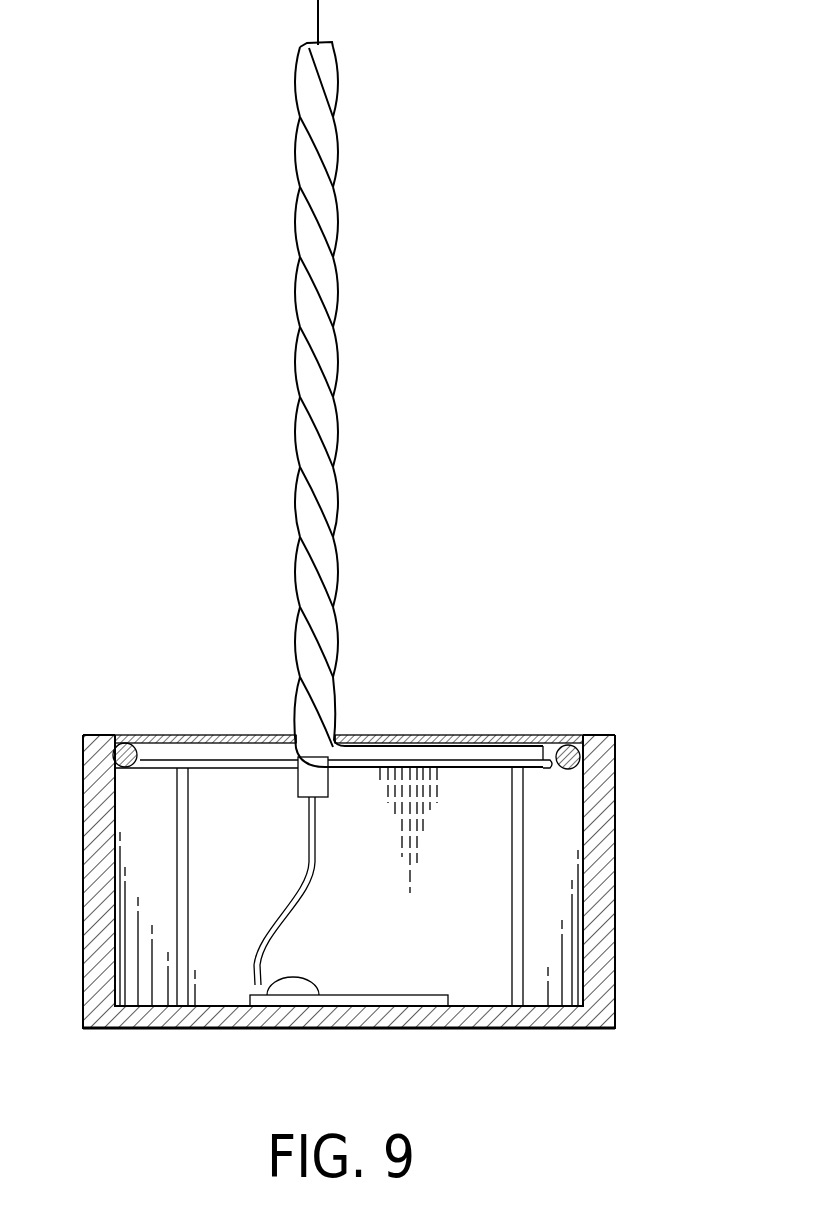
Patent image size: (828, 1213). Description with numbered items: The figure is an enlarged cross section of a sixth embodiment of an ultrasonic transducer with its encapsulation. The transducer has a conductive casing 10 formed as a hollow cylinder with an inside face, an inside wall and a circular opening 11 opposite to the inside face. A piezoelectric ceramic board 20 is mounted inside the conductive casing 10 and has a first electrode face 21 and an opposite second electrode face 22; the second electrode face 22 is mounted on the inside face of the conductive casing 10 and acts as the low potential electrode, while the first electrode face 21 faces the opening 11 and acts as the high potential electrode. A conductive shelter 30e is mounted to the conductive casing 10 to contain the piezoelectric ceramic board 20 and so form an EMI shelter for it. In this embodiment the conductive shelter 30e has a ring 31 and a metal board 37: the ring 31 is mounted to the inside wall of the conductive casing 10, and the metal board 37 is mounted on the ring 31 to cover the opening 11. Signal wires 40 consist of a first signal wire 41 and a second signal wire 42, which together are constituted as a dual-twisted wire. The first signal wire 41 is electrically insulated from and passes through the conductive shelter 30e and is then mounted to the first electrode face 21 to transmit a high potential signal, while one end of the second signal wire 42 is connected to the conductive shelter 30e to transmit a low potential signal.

The conductive casing 10 is at (615, 907).
The opening 11 is at (572, 797).
The piezoelectric ceramic board 20 is at (425, 992).
The first electrode face 21 is at (345, 993).
The second electrode face 22 is at (417, 1028).
The conductive shelter 30e is at (355, 735).
The ring 31 is at (114, 740).
The metal board 37 is at (497, 735).
The signal wires 40 is at (353, 258).
The first signal wire 41 is at (300, 757).
The second signal wire 42 is at (410, 750).